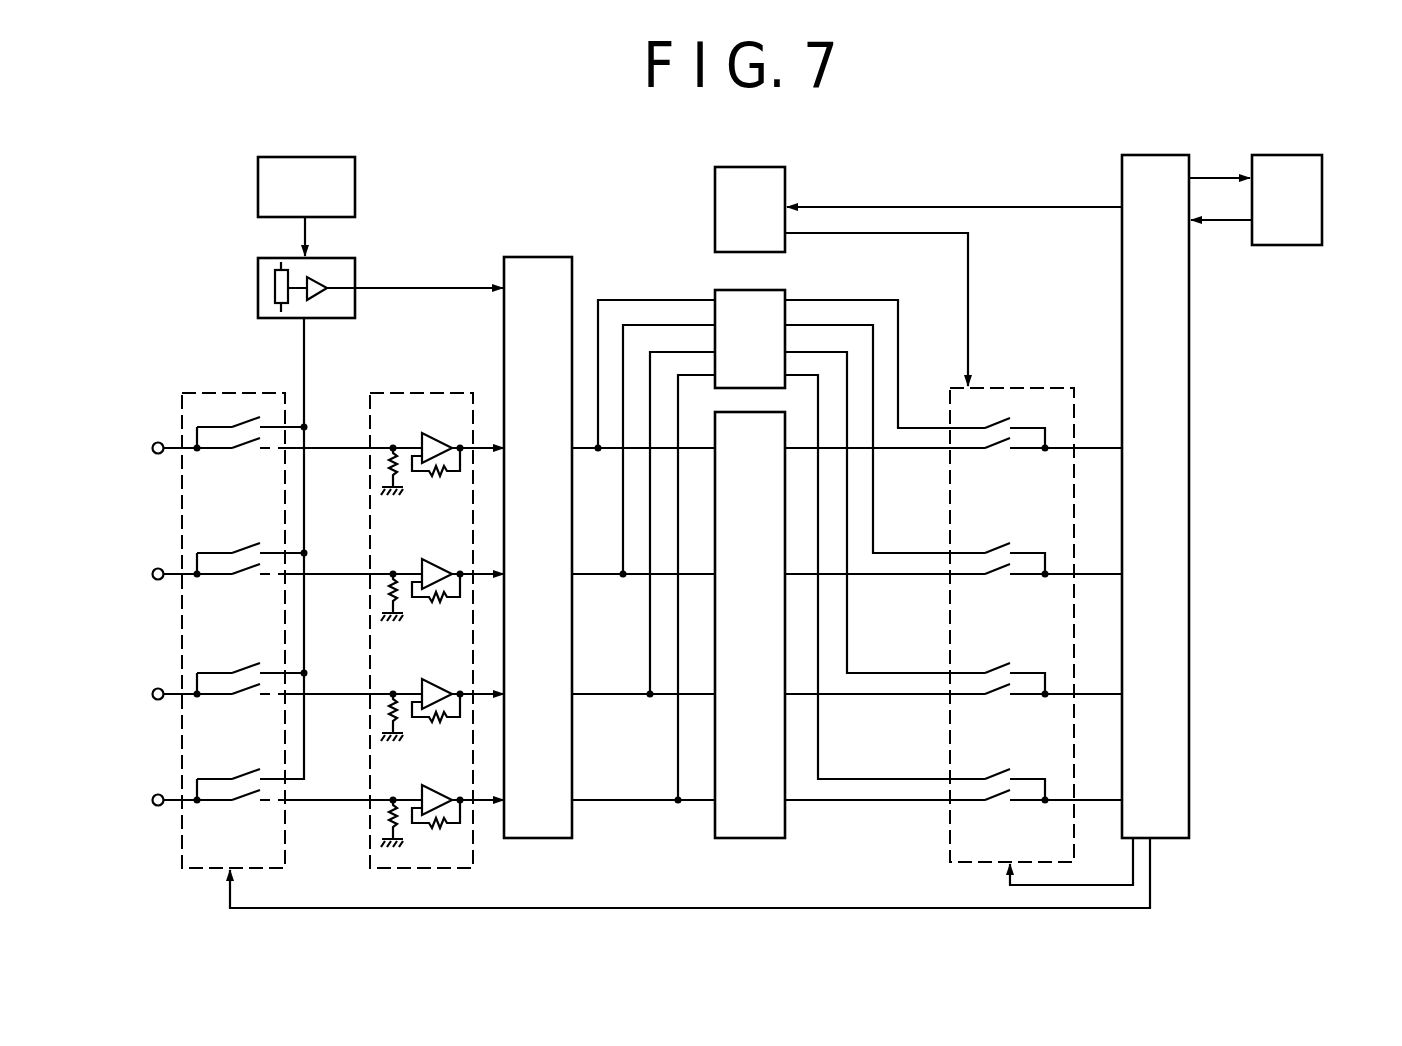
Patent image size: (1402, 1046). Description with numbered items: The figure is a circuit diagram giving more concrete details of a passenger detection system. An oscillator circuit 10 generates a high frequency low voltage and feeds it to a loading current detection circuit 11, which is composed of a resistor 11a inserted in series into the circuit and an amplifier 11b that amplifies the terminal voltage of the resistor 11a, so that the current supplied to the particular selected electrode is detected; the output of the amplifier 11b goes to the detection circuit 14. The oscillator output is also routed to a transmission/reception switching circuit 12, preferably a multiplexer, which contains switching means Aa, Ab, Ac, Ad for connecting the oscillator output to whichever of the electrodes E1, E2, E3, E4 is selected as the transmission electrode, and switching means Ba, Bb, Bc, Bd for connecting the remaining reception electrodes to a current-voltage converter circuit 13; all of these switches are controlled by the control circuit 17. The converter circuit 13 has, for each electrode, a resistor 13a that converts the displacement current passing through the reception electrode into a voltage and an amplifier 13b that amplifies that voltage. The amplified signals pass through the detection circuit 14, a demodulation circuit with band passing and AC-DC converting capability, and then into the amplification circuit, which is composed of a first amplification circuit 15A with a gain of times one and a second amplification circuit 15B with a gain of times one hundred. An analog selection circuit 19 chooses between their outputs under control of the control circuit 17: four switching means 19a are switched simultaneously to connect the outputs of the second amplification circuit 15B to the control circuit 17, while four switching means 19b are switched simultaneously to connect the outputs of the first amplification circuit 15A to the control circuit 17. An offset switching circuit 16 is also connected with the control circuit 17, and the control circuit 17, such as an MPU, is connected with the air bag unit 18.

The oscillator circuit 10 is at (258, 189).
The loading current detection circuit 11 is at (258, 289).
The resistor 11a is at (270, 307).
The amplifier 11b is at (327, 273).
The transmission/reception switching circuit 12 is at (215, 392).
The current-voltage converter circuit 13 is at (422, 393).
The resistor 13a is at (388, 478).
The amplifier 13b is at (438, 444).
The detection circuit 14 is at (540, 257).
The first amplification circuit 15A is at (785, 830).
The second amplification circuit 15B is at (715, 311).
The offset switching circuit 16 is at (715, 213).
The control circuit 17 is at (1165, 125).
The air bag unit 18 is at (1291, 155).
The analog selection circuit 19 is at (1029, 387).
The switching means 19a is at (1000, 420).
The switching means 19b is at (998, 452).
The switching means Aa is at (244, 424).
The switching means Ba is at (254, 448).
The switching means Ab is at (244, 550).
The switching means Bb is at (254, 574).
The switching means Ac is at (244, 670).
The switching means Bc is at (254, 694).
The switching means Ad is at (244, 776).
The switching means Bd is at (254, 800).
The electrode E1 is at (152, 447).
The electrode E2 is at (152, 573).
The electrode E3 is at (152, 693).
The electrode E4 is at (152, 799).